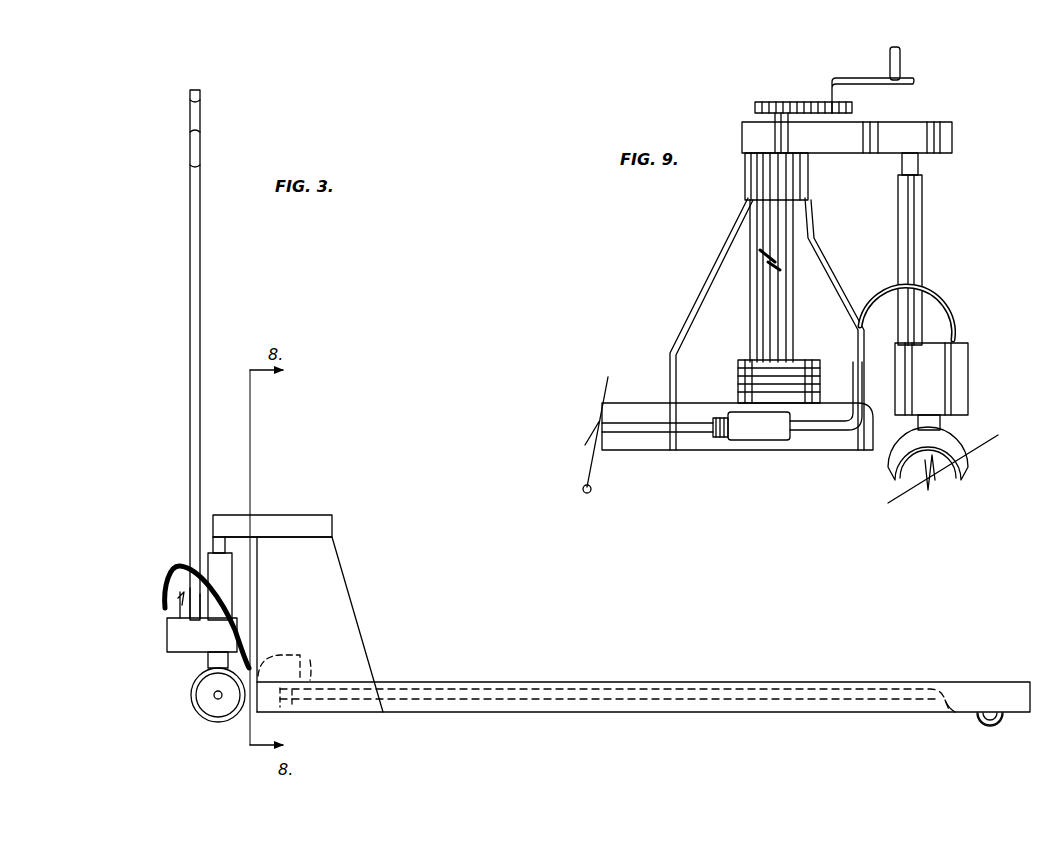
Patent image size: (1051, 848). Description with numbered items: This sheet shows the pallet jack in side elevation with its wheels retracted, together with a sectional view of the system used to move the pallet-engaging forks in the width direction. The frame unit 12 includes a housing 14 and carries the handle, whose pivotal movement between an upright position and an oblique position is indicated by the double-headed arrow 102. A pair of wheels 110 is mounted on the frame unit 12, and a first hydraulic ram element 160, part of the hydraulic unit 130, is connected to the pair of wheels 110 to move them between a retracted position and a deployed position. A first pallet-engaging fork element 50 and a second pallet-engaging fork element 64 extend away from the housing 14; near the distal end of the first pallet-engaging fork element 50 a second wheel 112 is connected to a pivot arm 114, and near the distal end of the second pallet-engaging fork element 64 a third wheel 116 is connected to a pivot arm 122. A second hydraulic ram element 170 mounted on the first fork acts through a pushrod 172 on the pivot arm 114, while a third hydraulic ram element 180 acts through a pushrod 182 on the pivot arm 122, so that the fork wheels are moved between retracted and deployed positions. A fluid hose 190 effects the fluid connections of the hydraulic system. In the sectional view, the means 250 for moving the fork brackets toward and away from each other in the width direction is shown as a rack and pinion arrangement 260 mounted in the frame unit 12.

In FIG. 9, the frame unit 12 is at (686, 291).
In FIG. 3, the housing 14 is at (348, 580).
In FIG. 9, the housing 14 is at (823, 253).
In FIG. 3, the first pallet-engaging fork element 50 is at (643, 680).
In FIG. 3, the second pallet-engaging fork element 64 is at (752, 679).
In FIG. 3, the double-headed arrow 102 is at (186, 118).
In FIG. 3, the pair of wheels 110 is at (248, 723).
In FIG. 9, the pair of wheels 110 is at (895, 475).
In FIG. 3, the second wheel 112 is at (945, 732).
In FIG. 3, the pivot arm 114 is at (965, 678).
In FIG. 3, the third wheel 116 is at (974, 724).
In FIG. 3, the pivot arm 122 is at (946, 704).
In FIG. 3, the hydraulic unit 130 is at (157, 594).
In FIG. 9, the first hydraulic ram element 160 is at (902, 250).
In FIG. 3, the second hydraulic ram element 170 is at (306, 652).
In FIG. 9, the second hydraulic ram element 170 is at (728, 426).
In FIG. 3, the pushrod 172 is at (615, 731).
In FIG. 3, the third hydraulic ram element 180 is at (306, 652).
In FIG. 9, the third hydraulic ram element 180 is at (727, 420).
In FIG. 3, the pushrod 182 is at (794, 703).
In FIG. 3, the fluid hose 190 is at (216, 545).
In FIG. 9, the fluid hose 190 is at (944, 290).
In FIG. 9, the means for moving the first bracket and the second bracket 250 is at (829, 78).
In FIG. 9, the rack and pinion arrangement 260 is at (766, 262).